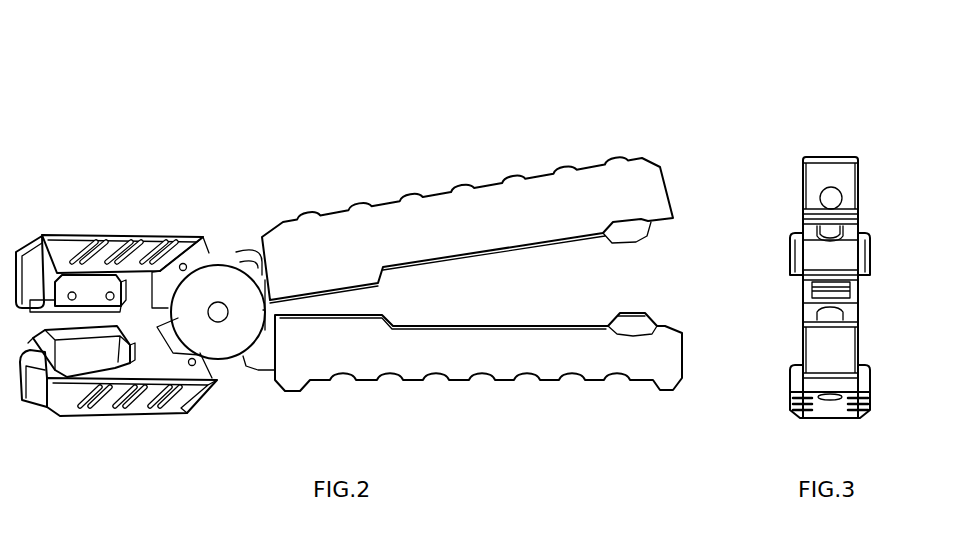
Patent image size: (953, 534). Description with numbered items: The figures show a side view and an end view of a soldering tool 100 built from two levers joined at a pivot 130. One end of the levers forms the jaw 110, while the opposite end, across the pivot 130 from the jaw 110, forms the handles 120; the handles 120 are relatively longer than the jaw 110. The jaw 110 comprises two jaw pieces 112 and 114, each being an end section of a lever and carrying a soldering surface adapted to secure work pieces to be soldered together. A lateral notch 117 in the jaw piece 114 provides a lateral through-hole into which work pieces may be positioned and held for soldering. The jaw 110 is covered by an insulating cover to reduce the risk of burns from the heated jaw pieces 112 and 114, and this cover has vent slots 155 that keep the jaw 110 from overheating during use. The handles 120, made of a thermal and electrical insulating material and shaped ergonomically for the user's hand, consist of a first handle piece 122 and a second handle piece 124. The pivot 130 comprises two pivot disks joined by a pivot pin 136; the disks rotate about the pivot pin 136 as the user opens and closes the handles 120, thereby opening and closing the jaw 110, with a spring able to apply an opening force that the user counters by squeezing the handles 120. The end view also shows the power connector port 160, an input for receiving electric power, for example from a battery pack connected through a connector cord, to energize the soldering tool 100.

In FIG. 2, the soldering tool 100 is at (402, 137).
In FIG. 3, the soldering tool 100 is at (796, 158).
In FIG. 2, the jaw 110 is at (24, 240).
In FIG. 2, the jaw piece 112 is at (88, 297).
In FIG. 2, the jaw piece 114 is at (68, 417).
In FIG. 2, the lateral notch 117 is at (47, 310).
In FIG. 2, the handles 120 is at (513, 170).
In FIG. 2, the first handle piece 122 is at (558, 218).
In FIG. 2, the second handle piece 124 is at (558, 352).
In FIG. 2, the pivot 130 is at (228, 243).
In FIG. 2, the pivot pin 136 is at (220, 322).
In FIG. 2, the vent slots 155 is at (160, 238).
In FIG. 3, the power connector port 160 is at (837, 267).